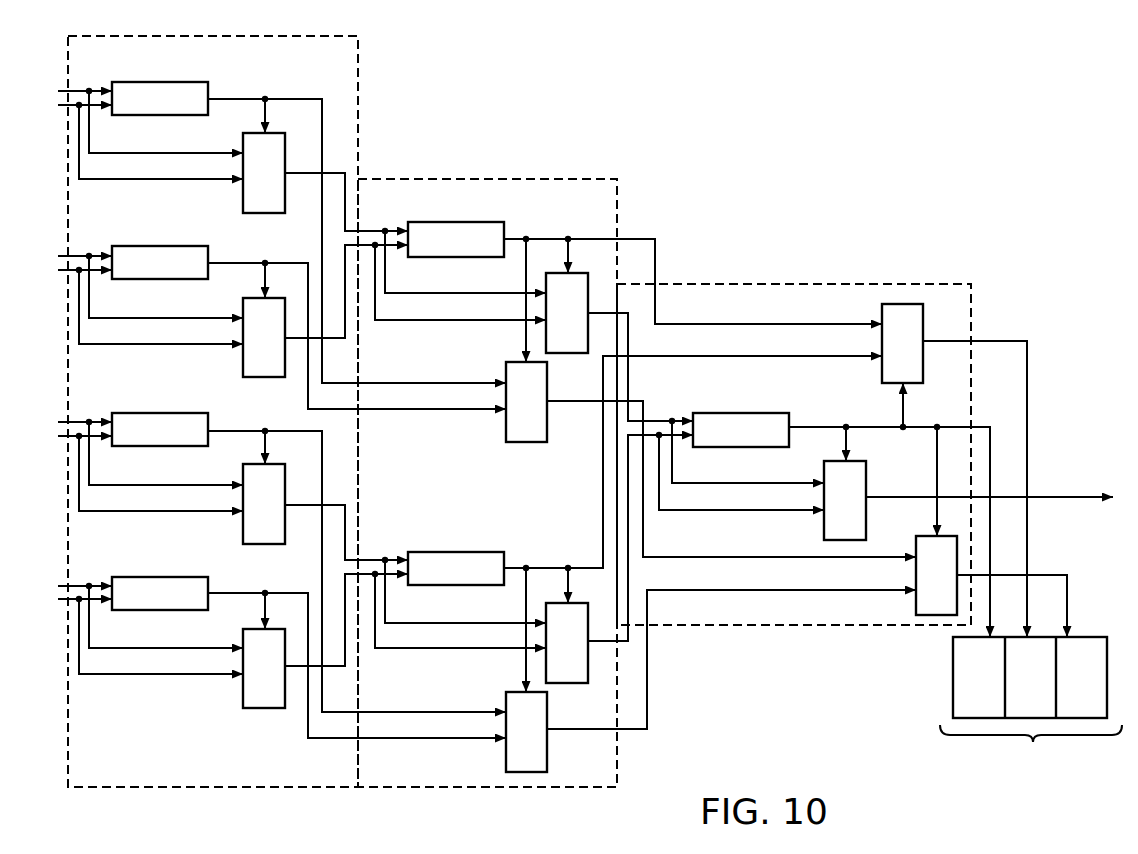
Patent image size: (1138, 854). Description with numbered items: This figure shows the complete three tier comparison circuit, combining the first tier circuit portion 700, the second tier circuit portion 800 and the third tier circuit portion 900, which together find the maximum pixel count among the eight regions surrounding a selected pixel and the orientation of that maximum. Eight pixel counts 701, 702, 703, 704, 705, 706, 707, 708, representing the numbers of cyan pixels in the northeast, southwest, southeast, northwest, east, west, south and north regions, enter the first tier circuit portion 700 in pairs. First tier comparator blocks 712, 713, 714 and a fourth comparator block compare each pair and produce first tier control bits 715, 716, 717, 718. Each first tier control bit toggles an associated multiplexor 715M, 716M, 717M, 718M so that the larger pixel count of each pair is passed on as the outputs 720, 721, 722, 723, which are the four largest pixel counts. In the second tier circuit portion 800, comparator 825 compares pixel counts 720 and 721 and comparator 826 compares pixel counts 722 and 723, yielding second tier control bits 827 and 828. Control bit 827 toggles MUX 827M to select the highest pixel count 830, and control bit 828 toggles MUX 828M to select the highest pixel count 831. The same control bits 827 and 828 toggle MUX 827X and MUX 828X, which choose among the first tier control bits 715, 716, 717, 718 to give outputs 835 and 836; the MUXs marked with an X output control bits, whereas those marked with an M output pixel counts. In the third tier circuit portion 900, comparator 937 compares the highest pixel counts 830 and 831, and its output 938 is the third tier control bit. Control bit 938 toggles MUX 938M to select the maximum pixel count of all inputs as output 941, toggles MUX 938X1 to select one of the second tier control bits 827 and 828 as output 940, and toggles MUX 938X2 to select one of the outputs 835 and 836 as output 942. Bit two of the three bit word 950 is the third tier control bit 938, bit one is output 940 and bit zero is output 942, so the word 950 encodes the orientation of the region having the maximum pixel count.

The first tier circuit portion 700 is at (362, 100).
The pixel count 701 is at (67, 90).
The pixel count 702 is at (67, 106).
The pixel count 703 is at (67, 255).
The pixel count 704 is at (67, 271).
The pixel count 705 is at (67, 421).
The pixel count 706 is at (67, 437).
The pixel count 707 is at (67, 585).
The pixel count 708 is at (67, 600).
The first tier comparator 712 is at (209, 91).
The first tier comparator 713 is at (147, 246).
The comparator 714 is at (147, 413).
The first tier control bit 715 is at (293, 98).
The first tier control bit 716 is at (230, 263).
The first tier control bit 717 is at (230, 431).
The first tier control bit 718 is at (235, 593).
The multiplexor 715M is at (243, 142).
The multiplexor 716M is at (243, 307).
The multiplexor 717M is at (243, 477).
The multiplexor 718M is at (243, 698).
The output of MUX 715M 720 is at (345, 173).
The output of MUX 716M 721 is at (345, 338).
The output of MUX 717M 722 is at (345, 505).
The output of MUX 718M 723 is at (345, 666).
The second tier circuit portion 800 is at (620, 192).
The comparator 825 is at (460, 222).
The comparator 826 is at (440, 552).
The second tier control bit 827 is at (525, 238).
The second tier control bit 828 is at (526, 567).
The multiplexor 827M is at (546, 290).
The multiplexor 828M is at (546, 615).
The multiplexor 827X is at (503, 428).
The multiplexor 828X is at (504, 697).
The highest pixel count 830 is at (632, 313).
The highest pixel count 831 is at (630, 641).
The output of MUX 827X 835 is at (580, 402).
The output of MUX 828X 836 is at (647, 722).
The third tier circuit portion 900 is at (821, 284).
The comparator 937 is at (747, 413).
The third tier control bit 938 is at (813, 427).
The multiplexor 938X1 is at (910, 303).
The multiplexor 938M is at (823, 529).
The multiplexor 938X2 is at (932, 615).
The output of MUX 938X1 940 is at (1006, 340).
The output of MUX 938M 941 is at (1063, 497).
The output of MUX 938X2 942 is at (1048, 574).
The three-bit word 950 is at (1031, 704).